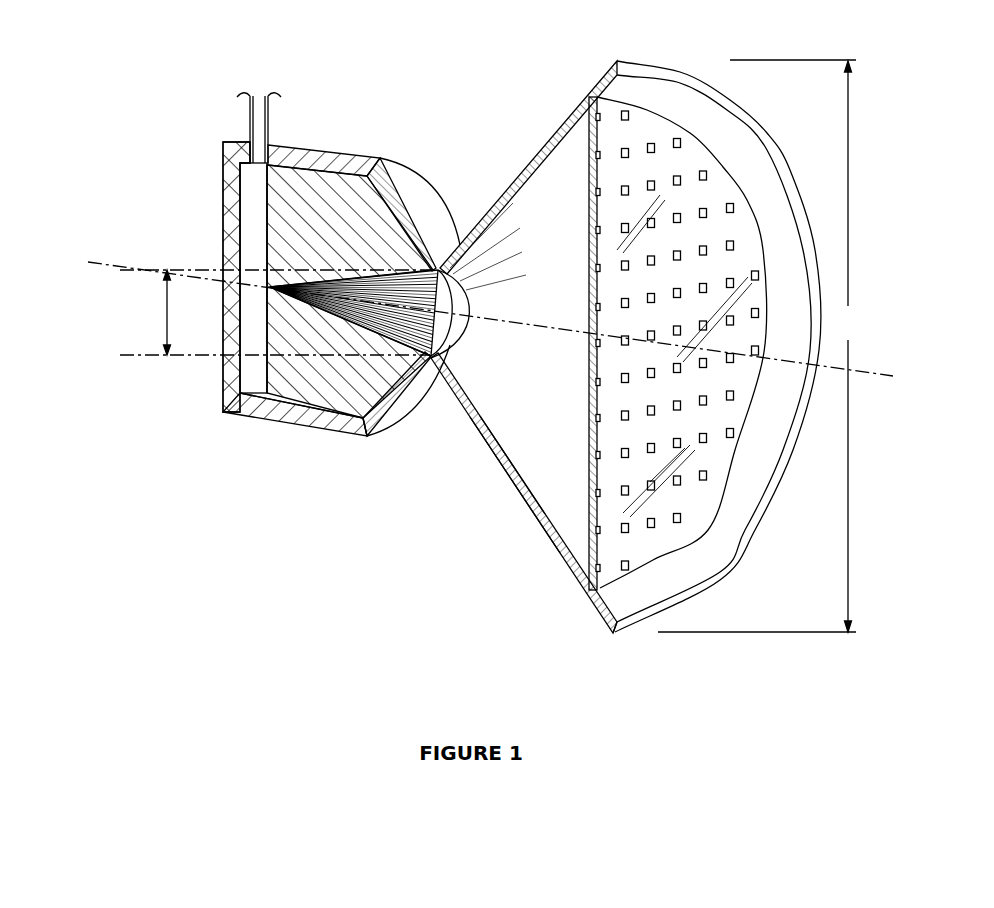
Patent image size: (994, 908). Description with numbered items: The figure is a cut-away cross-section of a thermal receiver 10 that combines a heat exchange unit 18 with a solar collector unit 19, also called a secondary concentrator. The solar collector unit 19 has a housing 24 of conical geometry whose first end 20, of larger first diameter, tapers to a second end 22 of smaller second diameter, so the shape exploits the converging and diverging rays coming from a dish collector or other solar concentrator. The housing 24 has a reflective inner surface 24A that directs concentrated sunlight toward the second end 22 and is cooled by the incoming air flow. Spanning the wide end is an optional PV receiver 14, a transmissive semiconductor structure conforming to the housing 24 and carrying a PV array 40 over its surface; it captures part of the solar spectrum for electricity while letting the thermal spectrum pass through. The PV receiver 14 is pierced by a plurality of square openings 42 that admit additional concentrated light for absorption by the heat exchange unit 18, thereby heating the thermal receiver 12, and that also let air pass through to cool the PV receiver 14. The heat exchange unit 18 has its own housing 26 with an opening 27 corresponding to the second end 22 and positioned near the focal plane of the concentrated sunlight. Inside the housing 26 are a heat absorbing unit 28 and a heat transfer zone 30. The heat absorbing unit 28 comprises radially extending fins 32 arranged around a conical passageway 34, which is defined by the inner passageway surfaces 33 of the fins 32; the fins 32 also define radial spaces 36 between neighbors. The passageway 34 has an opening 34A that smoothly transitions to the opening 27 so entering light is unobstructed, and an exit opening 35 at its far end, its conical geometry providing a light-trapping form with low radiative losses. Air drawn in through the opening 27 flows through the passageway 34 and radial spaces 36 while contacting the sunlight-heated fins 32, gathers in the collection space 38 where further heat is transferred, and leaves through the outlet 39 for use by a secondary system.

The thermal receiver 10 is at (738, 38).
The thermal receiver 12 is at (487, 121).
The PV receiver 14 is at (721, 177).
The heat exchange unit 18 is at (390, 437).
The solar collector unit 19 is at (508, 497).
The first end 20 is at (667, 62).
The second end 22 is at (458, 242).
The housing 24 is at (548, 533).
The inner surface 24A is at (500, 462).
The housing 26 is at (368, 162).
The opening 27 is at (440, 368).
The heat absorbing unit 28 is at (328, 416).
The heat transfer zone 30 is at (248, 223).
The fins 32 is at (262, 265).
The passageway surfaces 33 is at (367, 437).
The passageway 34 is at (262, 400).
The opening 34A is at (475, 370).
The exit opening 35 is at (258, 287).
The radial spaces 36 is at (300, 408).
The collection space 38 is at (248, 365).
The outlet 39 is at (250, 104).
The PV array 40 is at (695, 500).
The openings 42 is at (625, 565).